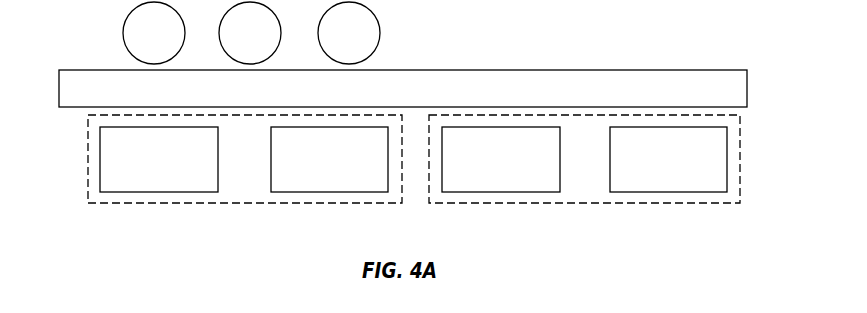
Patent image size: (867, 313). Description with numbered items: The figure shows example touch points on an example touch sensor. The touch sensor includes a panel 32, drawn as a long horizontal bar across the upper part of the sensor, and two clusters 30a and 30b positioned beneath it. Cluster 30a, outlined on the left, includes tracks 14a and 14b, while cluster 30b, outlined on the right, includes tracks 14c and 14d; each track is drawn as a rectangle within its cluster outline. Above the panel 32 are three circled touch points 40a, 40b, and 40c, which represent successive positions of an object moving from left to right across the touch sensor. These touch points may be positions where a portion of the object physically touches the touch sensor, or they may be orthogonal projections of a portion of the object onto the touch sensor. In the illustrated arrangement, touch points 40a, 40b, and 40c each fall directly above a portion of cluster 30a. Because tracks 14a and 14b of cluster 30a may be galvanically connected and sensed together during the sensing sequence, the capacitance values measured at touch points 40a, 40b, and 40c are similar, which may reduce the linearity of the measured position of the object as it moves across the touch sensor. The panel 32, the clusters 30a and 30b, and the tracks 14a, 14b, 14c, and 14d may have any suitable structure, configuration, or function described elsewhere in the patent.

The touch point 40a is at (172, 46).
The touch point 40b is at (268, 46).
The touch point 40c is at (367, 46).
The panel 32 is at (712, 85).
The cluster 30a is at (88, 185).
The cluster 30b is at (740, 190).
The track 14a is at (162, 182).
The track 14b is at (338, 182).
The track 14c is at (502, 182).
The track 14d is at (673, 182).